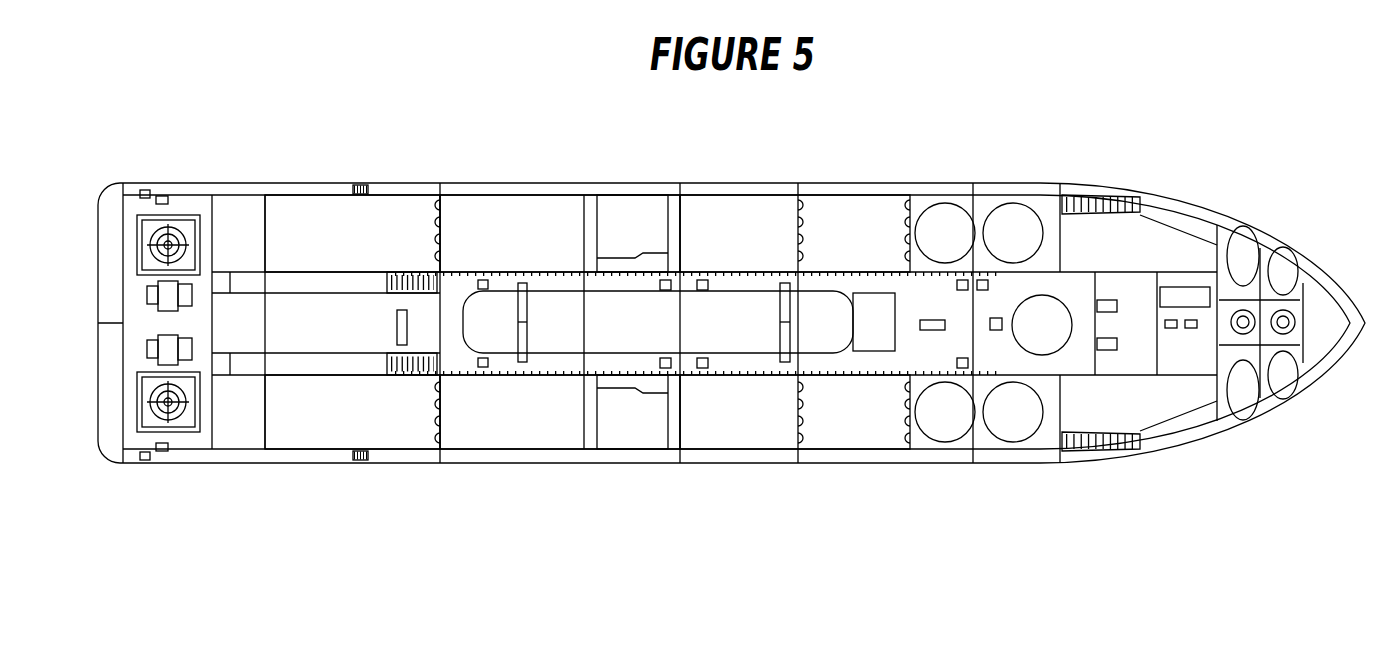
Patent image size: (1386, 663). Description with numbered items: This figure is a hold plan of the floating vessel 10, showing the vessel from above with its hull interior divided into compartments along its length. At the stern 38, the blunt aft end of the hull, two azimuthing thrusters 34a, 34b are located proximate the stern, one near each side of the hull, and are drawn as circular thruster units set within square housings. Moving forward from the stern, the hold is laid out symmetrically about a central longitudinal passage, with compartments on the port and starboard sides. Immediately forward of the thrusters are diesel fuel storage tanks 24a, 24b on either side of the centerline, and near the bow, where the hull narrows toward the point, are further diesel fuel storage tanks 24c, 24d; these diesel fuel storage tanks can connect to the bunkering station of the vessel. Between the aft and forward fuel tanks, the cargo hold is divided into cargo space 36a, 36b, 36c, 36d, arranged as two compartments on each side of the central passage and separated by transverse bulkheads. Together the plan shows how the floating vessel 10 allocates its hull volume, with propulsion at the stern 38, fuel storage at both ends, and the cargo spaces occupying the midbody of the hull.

The floating vessel 10 is at (1333, 112).
The stern 38 is at (98, 211).
The azimuthing thruster 34a is at (186, 420).
The azimuthing thruster 34b is at (186, 228).
The diesel fuel storage tank 24a is at (250, 437).
The diesel fuel storage tank 24b is at (250, 208).
The diesel fuel storage tank 24c is at (1173, 412).
The diesel fuel storage tank 24d is at (1173, 235).
The cargo space 36a is at (459, 437).
The cargo space 36b is at (459, 207).
The cargo space 36c is at (776, 437).
The cargo space 36d is at (776, 207).